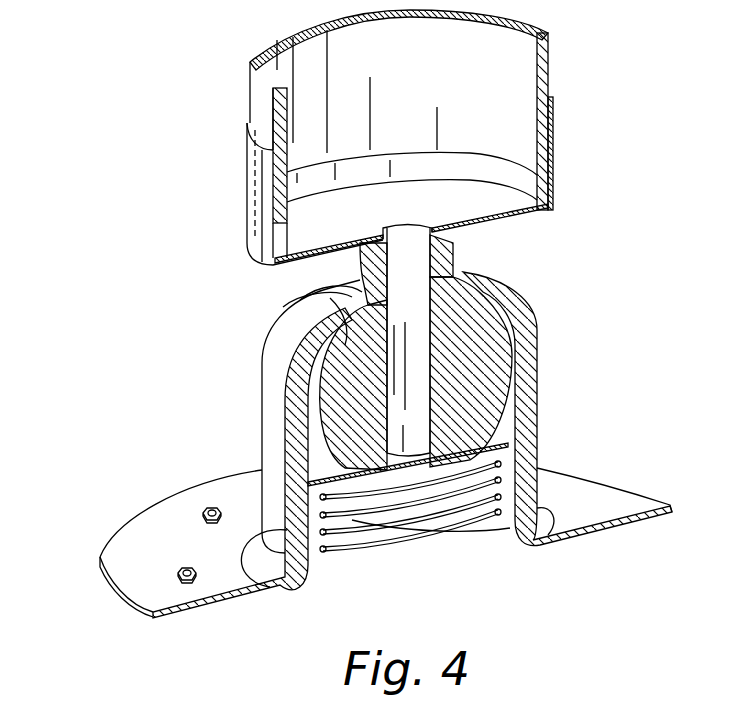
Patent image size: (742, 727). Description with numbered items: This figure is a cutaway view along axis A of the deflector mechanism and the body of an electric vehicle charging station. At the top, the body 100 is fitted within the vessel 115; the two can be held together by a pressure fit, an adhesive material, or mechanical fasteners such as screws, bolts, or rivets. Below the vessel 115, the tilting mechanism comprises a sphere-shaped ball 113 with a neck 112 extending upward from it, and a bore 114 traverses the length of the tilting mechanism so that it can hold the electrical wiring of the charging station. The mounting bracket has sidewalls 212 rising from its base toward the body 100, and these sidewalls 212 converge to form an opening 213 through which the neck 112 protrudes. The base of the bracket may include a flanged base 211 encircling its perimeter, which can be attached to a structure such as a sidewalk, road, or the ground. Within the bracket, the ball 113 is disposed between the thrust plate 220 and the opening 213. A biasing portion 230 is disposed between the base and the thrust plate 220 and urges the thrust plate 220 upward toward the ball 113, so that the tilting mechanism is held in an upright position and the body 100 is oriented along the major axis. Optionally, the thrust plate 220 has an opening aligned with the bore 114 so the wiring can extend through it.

The body 100 is at (550, 60).
The neck 112 is at (460, 251).
The ball 113 is at (350, 377).
The bore 114 is at (470, 338).
The vessel 115 is at (250, 198).
The flanged base 211 is at (632, 502).
The sidewalls 212 is at (540, 416).
The opening 213 is at (283, 306).
The thrust plate 220 is at (313, 440).
The biasing portion 230 is at (393, 492).